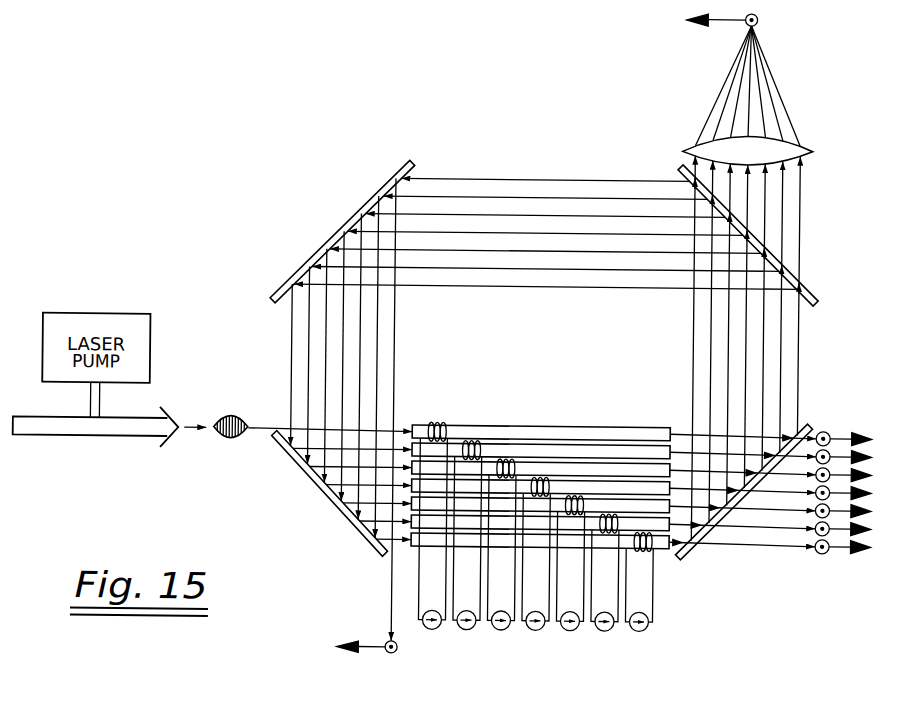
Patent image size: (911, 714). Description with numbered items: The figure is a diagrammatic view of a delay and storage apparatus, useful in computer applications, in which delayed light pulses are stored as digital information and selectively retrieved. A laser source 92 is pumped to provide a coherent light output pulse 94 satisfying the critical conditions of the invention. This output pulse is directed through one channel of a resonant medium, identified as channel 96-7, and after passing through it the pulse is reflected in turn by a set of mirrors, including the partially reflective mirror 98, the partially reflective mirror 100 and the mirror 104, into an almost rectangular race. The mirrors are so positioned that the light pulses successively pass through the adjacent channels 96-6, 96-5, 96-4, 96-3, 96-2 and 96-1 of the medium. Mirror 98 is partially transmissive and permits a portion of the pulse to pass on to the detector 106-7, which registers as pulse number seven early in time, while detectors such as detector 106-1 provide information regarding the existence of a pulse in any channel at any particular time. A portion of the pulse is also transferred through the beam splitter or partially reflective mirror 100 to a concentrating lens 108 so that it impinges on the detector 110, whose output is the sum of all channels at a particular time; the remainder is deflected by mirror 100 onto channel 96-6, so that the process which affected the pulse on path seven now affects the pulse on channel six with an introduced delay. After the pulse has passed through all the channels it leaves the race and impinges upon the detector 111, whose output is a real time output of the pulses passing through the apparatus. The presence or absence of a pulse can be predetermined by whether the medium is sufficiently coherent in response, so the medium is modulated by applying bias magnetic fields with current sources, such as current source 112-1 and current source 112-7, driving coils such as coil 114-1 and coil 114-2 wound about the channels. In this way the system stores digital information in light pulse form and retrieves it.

The laser source 92 is at (45, 425).
The coherent light output pulse 94 is at (238, 417).
The channel of resonant medium 96-1 is at (538, 447).
The channel of resonant medium 96-2 is at (568, 466).
The channel of resonant medium 96-3 is at (601, 484).
The channel of resonant medium 96-4 is at (631, 502).
The channel of resonant medium 96-5 is at (652, 522).
The channel of resonant medium 96-6 is at (666, 534).
The channel of resonant medium 96-7 is at (667, 549).
The partially reflective mirror 98 is at (692, 554).
The partially reflective mirror 100 is at (814, 292).
The mirror 104 is at (304, 471).
The detector 106-1 is at (824, 429).
The detector 106-7 is at (825, 551).
The concentrating lens 108 is at (685, 146).
The detector 110 is at (754, 18).
The detector 111 is at (394, 655).
The current source 112-1 is at (435, 632).
The current source 112-7 is at (643, 630).
The coil 114-1 is at (444, 423).
The coil 114-2 is at (478, 440).